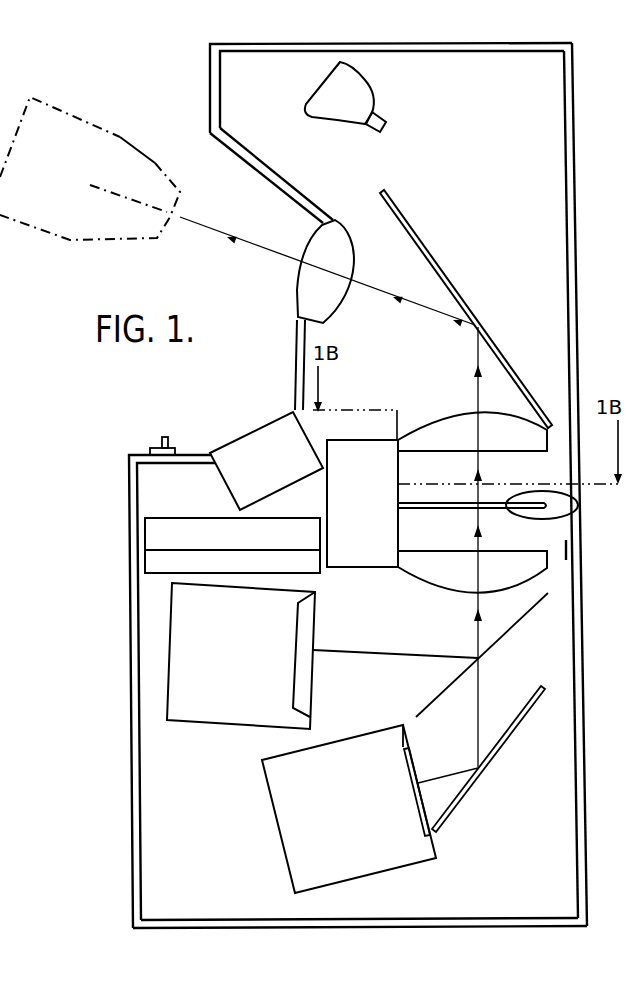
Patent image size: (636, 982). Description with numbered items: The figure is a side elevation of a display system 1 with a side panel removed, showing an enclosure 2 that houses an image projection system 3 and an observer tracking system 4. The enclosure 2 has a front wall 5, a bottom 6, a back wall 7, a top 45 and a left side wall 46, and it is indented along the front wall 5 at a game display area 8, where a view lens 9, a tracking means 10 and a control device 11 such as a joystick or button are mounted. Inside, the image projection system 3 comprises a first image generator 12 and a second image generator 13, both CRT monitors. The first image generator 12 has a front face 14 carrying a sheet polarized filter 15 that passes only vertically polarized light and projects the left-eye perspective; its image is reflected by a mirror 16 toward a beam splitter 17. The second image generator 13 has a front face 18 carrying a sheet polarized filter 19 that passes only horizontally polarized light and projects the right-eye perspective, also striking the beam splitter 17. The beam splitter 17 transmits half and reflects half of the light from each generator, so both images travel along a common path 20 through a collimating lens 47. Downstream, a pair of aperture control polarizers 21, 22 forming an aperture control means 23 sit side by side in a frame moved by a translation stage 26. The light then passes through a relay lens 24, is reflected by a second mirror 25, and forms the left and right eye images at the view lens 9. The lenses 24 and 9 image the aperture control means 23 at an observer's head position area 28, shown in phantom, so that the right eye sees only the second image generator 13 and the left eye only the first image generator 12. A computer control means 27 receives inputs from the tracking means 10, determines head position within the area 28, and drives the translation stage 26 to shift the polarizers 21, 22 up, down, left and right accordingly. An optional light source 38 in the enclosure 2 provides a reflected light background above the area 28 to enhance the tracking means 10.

The display system 1 is at (351, 480).
The enclosure 2 is at (577, 257).
The image projection system 3 is at (441, 767).
The observer tracking system 4 is at (247, 449).
The front wall 5 is at (127, 490).
The bottom 6 is at (405, 928).
The back wall 7 is at (578, 559).
The game display area 8 is at (327, 266).
The view lens 9 is at (346, 236).
The tracking means 10 is at (192, 398).
The control device 11 is at (163, 436).
The first image generator 12 is at (349, 809).
The second image generator 13 is at (241, 656).
The front face 14 is at (416, 744).
The sheet polarized filter 15 is at (414, 764).
The mirror 16 is at (509, 740).
The beam splitter 17 is at (491, 647).
The front face 18 is at (300, 620).
The sheet polarized filter 19 is at (305, 643).
The path 20 is at (479, 643).
The aperture control polarizer 21 is at (550, 493).
The aperture control polarizer 22 is at (507, 520).
The aperture control means 23 is at (540, 468).
The lens 24 is at (530, 441).
The second mirror 25 is at (500, 349).
The translation stage 26 is at (362, 503).
The computer control means 27 is at (232, 545).
The observer's head position area 28 is at (125, 137).
The light source 38 is at (343, 90).
The top 45 is at (553, 42).
The left side wall 46 is at (215, 858).
The lens 47 is at (535, 571).